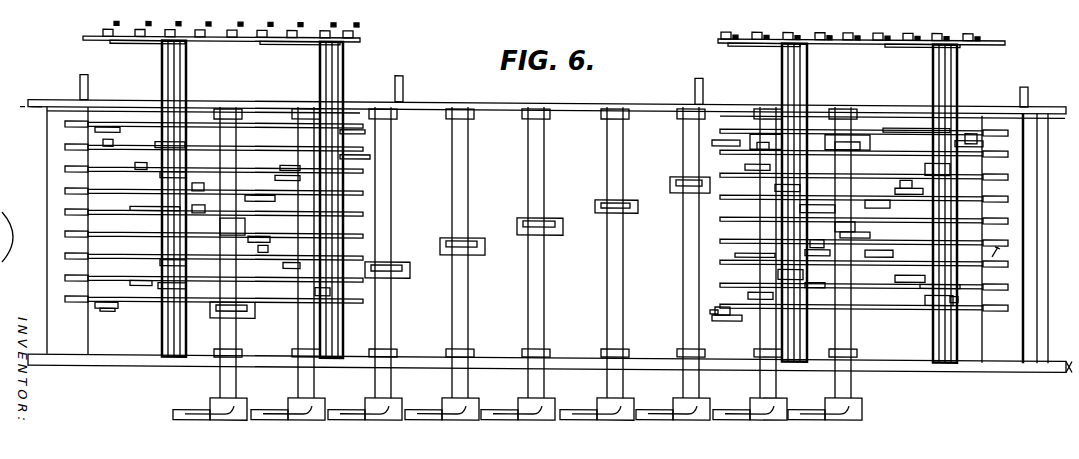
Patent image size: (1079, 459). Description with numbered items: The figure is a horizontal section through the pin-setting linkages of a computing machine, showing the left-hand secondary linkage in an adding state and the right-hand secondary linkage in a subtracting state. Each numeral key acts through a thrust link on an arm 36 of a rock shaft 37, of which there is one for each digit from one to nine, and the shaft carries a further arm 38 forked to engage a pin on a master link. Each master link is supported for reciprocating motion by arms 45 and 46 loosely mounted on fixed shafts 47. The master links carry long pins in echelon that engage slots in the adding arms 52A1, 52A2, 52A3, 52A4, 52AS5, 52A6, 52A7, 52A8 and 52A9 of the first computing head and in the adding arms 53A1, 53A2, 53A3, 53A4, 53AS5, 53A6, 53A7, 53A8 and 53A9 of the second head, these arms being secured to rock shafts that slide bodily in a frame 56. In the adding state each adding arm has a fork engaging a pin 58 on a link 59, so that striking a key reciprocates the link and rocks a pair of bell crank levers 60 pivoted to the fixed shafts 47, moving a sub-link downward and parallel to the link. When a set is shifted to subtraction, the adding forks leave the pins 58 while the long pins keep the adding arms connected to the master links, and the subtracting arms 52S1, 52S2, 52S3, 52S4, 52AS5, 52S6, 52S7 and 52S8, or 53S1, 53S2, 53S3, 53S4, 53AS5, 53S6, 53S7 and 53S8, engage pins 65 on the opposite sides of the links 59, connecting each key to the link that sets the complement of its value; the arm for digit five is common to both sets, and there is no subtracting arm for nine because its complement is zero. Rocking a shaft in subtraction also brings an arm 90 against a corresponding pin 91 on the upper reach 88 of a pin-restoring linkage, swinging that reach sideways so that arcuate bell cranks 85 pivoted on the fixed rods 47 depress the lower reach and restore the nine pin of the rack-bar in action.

The arm 36 is at (492, 417).
The rock shaft 37 is at (610, 303).
The arm 38 is at (255, 311).
The arm 45 is at (165, 289).
The arm 46 is at (928, 291).
The fixed shaft 47 is at (167, 366).
The frame 56 is at (656, 109).
The pin 58 is at (108, 309).
The link 59 is at (366, 233).
The bell crank lever 60 is at (131, 211).
The pin 65 is at (134, 166).
The arcuate bell crank 85 is at (143, 44).
The upper reach 88 is at (363, 40).
The arm 90 is at (329, 29).
The pin 91 is at (258, 31).
The subtracting arm 52S1 is at (107, 121).
The subtracting arm 52S2 is at (144, 141).
The subtracting arm 52S3 is at (188, 166).
The subtracting arm 52S4 is at (202, 182).
The subtracting arm 52S6 is at (277, 250).
The subtracting arm 52S7 is at (288, 263).
The subtracting arm 52S8 is at (318, 290).
The adding arm 52A1 is at (119, 310).
The adding arm 52A2 is at (140, 284).
The adding arm 52A3 is at (188, 269).
The adding arm 52A4 is at (202, 220).
The adding and subtracting arm 52AS5 is at (252, 230).
The adding arm 52A6 is at (292, 181).
The adding arm 52A7 is at (287, 166).
The adding arm 52A8 is at (380, 158).
The adding arm 52A9 is at (365, 133).
The subtracting arm 53S1 is at (717, 141).
The subtracting arm 53S2 is at (746, 168).
The subtracting arm 53S3 is at (775, 189).
The subtracting arm 53S4 is at (831, 230).
The subtracting arm 53S6 is at (863, 252).
The subtracting arm 53S7 is at (915, 280).
The subtracting arm 53S8 is at (958, 299).
The adding arm 53A1 is at (738, 323).
The adding arm 53A2 is at (748, 297).
The adding arm 53A3 is at (778, 276).
The adding arm 53A4 is at (819, 277).
The adding and subtracting arm 53AS5 is at (870, 232).
The adding arm 53A6 is at (860, 210).
The adding arm 53A7 is at (900, 193).
The adding arm 53A8 is at (924, 170).
The adding arm 53A9 is at (984, 146).